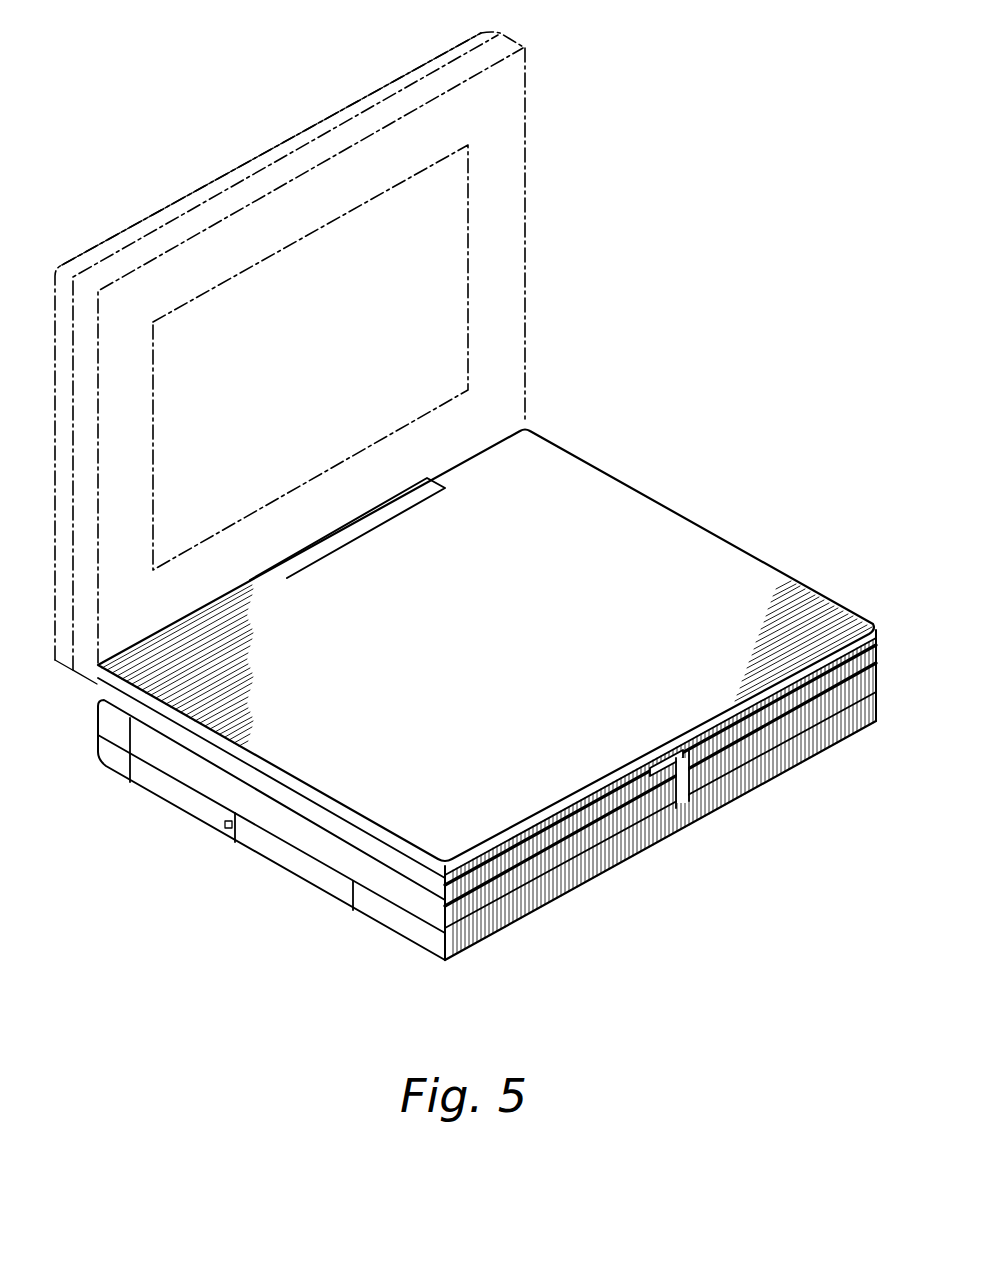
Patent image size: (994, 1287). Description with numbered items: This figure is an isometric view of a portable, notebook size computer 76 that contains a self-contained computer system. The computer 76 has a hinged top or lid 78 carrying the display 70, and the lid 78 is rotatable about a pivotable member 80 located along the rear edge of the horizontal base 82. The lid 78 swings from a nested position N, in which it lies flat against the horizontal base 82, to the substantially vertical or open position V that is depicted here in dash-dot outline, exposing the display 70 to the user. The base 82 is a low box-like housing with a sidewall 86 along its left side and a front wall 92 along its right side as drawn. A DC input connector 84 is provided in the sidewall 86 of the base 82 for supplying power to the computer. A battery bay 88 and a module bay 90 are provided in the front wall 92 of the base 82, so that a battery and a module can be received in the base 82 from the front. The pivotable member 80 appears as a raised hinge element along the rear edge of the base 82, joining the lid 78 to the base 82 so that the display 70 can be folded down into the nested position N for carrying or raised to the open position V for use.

The display 70 is at (470, 247).
The portable computer 76 is at (710, 436).
The hinged top or lid 78 is at (527, 159).
The pivotable member 80 is at (387, 510).
The horizontal base 82 is at (95, 765).
The DC input connector 84 is at (228, 829).
The sidewall 86 is at (300, 878).
The battery bay 88 is at (810, 720).
The module bay 90 is at (506, 895).
The front wall 92 is at (682, 810).
The open position V is at (176, 203).
The nested position N is at (877, 631).